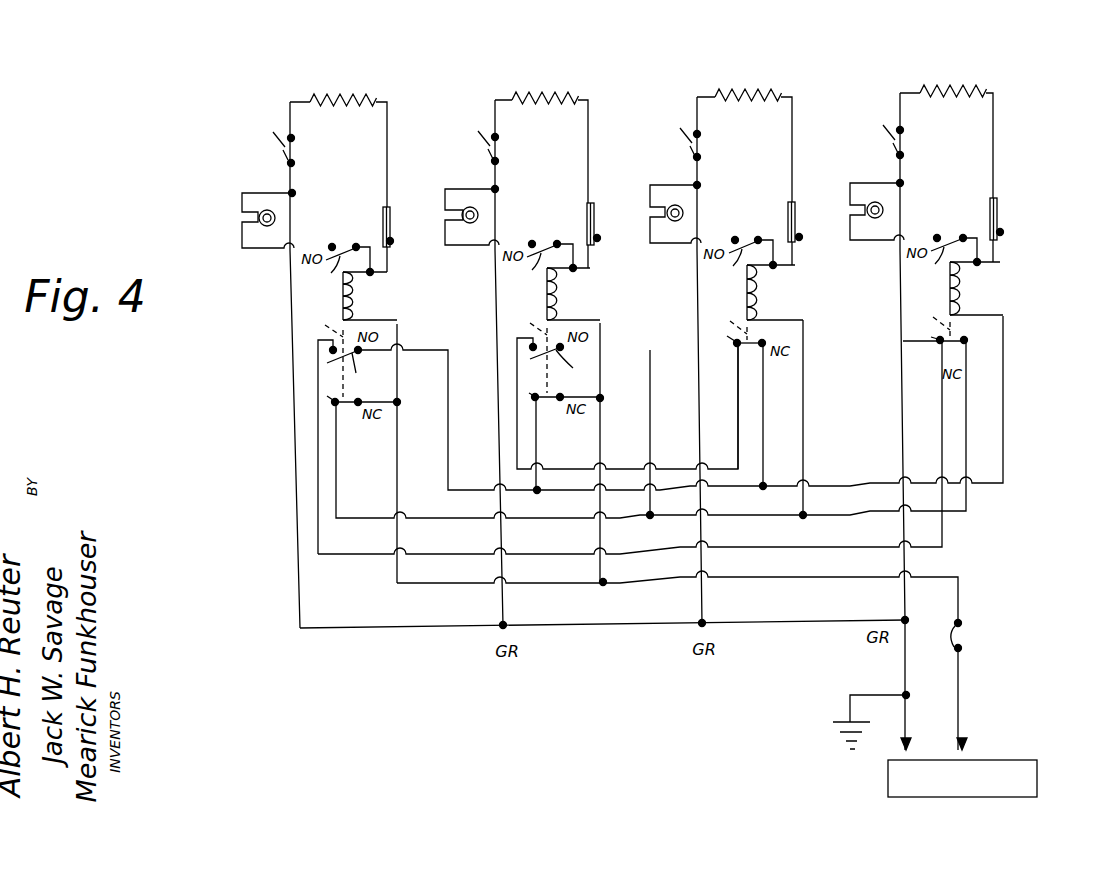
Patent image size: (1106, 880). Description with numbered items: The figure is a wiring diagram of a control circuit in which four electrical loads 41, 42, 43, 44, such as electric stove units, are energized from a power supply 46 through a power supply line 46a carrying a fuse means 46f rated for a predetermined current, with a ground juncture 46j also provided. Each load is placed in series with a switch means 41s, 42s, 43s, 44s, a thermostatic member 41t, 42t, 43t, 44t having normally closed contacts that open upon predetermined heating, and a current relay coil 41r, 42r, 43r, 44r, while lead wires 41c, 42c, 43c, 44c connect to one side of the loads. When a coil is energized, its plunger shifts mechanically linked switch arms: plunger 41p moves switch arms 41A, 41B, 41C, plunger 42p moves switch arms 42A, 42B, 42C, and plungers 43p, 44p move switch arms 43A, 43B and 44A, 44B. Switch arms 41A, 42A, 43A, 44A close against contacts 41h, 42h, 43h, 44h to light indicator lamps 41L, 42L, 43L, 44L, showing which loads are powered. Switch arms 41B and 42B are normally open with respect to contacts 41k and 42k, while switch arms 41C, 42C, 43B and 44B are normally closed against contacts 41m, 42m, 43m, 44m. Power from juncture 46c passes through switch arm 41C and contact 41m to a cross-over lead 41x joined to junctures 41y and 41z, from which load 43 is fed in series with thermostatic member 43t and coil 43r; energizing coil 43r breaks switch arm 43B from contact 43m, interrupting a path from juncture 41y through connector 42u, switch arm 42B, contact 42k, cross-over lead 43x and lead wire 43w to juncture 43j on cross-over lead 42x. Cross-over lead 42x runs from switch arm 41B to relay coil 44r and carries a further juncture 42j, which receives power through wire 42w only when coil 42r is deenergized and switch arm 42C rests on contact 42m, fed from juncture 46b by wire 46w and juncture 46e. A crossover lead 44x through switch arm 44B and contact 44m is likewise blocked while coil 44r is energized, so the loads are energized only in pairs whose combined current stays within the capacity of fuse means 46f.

The electrical load 41 is at (335, 99).
The switch means 41s is at (290, 138).
The light-indicator means 41L is at (262, 211).
The thermostatic member 41t is at (382, 228).
The contact 41h is at (332, 245).
The switch arm 41A is at (345, 296).
The current relay coil 41r is at (351, 306).
The magnetic core or movable plunger 41p is at (319, 350).
The contact 41k is at (332, 351).
The switch arm 41B is at (360, 370).
The contact 41m is at (334, 402).
The switch arm 41C is at (342, 401).
The lead wire 41c is at (317, 630).
The cross-over lead 41x is at (533, 519).
The juncture 41y is at (652, 512).
The juncture 41z is at (806, 512).
The electrical load 42 is at (543, 96).
The switch means 42s is at (494, 135).
The light-indicator means 42L is at (469, 209).
The thermostatic member 42t is at (586, 224).
The contact 42h is at (533, 242).
The switch arm 42A is at (549, 294).
The current relay coil 42r is at (556, 301).
The magnetic core or plunger 42p is at (524, 347).
The contact 42k is at (532, 347).
The switch arm 42B is at (565, 366).
The contact 42m is at (535, 397).
The switch arm 42C is at (541, 398).
The wire 42w is at (518, 448).
The connector or wire 42u is at (651, 402).
The juncture 42j is at (540, 486).
The cross-over lead 42x is at (523, 492).
The lead wire 42c is at (502, 599).
The electrical load 43 is at (755, 94).
The switch means 43s is at (696, 133).
The light-indicator means 43L is at (673, 206).
The thermostatic member 43t is at (788, 219).
The contact 43h is at (736, 237).
The switch arm 43A is at (749, 292).
The current relay coil 43r is at (757, 292).
The magnetic core or plunger 43p is at (722, 320).
The contact 43m is at (735, 344).
The switch arm 43B is at (755, 347).
The cross-over lead 43x is at (738, 417).
The lead wire 43w is at (765, 423).
The juncture 43j is at (765, 483).
The lead wire 43c is at (705, 600).
The electrical load 44 is at (957, 90).
The switch means 44s is at (898, 128).
The light-indicator means 44L is at (874, 202).
The thermostatic member 44t is at (998, 216).
The contact 44h is at (942, 238).
The switch arm 44A is at (951, 288).
The current relay coil 44r is at (960, 291).
The magnetic core or plunger 44p is at (925, 318).
The contact 44m is at (902, 342).
The switch arm 44B is at (966, 345).
The crossover lead 44x is at (762, 549).
The lead wire 44c is at (903, 596).
The power supply 46 is at (1037, 768).
The power supply line 46a is at (962, 668).
The juncture 46b is at (605, 584).
The juncture 46c is at (398, 403).
The tap-in connection or juncture 46e is at (602, 398).
The overload protector or fuse means 46f is at (954, 640).
The ground juncture 46j is at (905, 694).
The wire 46w is at (602, 434).